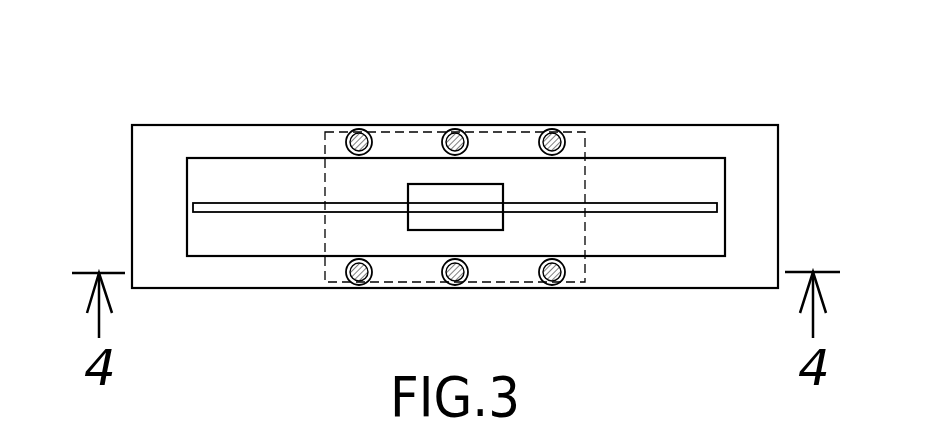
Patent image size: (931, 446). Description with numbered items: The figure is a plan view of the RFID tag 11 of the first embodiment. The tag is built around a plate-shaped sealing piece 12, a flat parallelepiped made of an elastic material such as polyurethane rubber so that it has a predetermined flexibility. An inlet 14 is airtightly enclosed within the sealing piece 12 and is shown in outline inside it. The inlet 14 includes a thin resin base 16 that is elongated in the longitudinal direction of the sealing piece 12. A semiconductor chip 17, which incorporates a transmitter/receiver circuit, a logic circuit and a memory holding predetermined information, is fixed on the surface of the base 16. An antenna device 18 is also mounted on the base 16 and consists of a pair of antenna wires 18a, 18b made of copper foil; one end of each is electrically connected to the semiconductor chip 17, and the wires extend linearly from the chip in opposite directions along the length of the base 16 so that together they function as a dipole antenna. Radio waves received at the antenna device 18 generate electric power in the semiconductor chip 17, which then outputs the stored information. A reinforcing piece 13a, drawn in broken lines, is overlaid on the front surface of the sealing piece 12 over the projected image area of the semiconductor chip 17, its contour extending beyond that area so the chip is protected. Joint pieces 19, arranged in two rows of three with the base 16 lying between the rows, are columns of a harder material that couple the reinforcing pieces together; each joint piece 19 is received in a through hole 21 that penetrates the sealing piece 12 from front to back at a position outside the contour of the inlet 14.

The RFID tag 11 is at (723, 105).
The sealing piece 12 is at (178, 125).
The reinforcing piece 13a is at (325, 266).
The inlet 14 is at (622, 158).
The base 16 is at (662, 257).
The semiconductor chip 17 is at (410, 193).
The antenna device 18 is at (248, 212).
The antenna wire 18a is at (250, 203).
The antenna wire 18b is at (665, 203).
The joint piece 19 is at (364, 130).
The through hole 21 is at (352, 130).